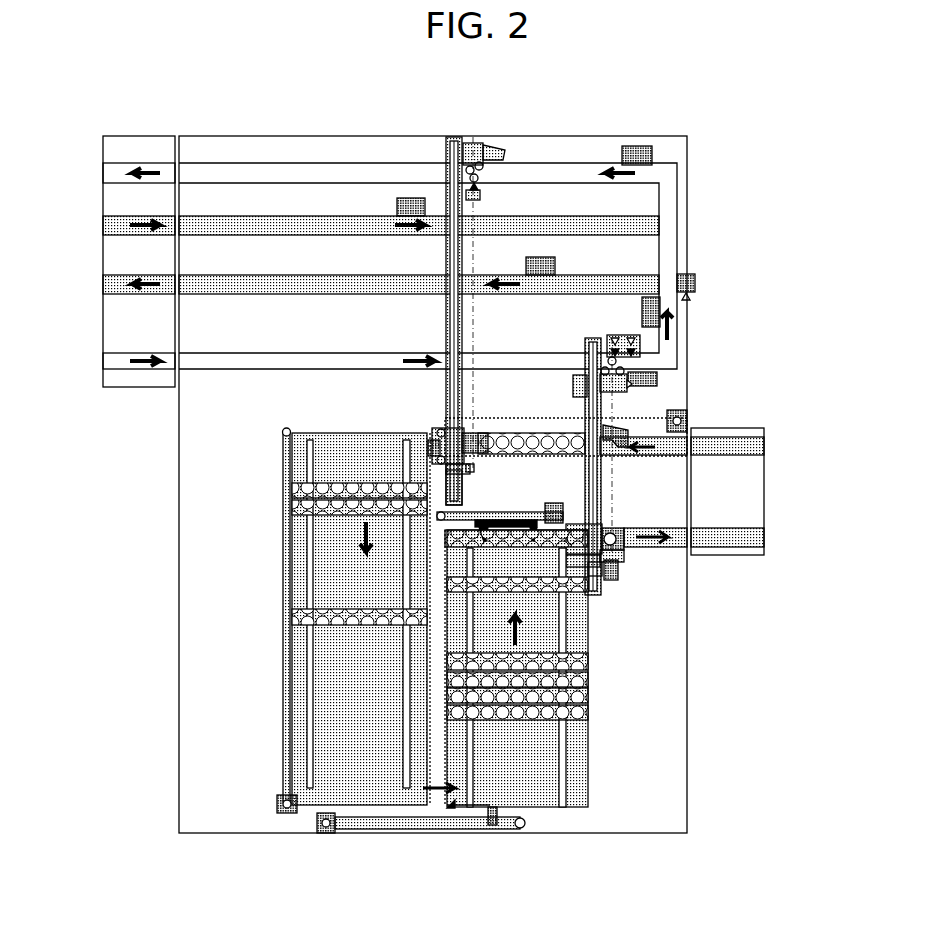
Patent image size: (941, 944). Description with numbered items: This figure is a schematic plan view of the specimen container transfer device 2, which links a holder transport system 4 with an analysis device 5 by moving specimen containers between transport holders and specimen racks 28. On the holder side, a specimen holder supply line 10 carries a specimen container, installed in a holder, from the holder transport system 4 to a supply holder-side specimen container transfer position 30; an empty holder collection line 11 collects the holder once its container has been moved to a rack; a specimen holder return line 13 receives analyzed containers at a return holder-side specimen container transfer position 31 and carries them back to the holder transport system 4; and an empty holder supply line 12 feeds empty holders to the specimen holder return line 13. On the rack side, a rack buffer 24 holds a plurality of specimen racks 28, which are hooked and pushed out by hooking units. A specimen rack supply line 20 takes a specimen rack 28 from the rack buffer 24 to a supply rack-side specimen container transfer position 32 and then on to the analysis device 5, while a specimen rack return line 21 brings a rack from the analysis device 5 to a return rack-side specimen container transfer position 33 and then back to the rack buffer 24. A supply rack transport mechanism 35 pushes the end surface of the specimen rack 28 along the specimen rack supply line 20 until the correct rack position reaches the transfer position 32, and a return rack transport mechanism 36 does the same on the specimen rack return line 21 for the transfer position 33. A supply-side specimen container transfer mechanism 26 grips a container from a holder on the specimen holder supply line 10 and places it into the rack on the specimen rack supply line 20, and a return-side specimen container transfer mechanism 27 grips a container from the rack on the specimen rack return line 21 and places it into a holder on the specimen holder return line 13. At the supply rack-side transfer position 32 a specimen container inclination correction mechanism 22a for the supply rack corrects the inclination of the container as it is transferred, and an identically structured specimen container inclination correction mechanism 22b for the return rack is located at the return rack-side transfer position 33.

The specimen container transfer device 2 is at (201, 856).
The holder transport system 4 is at (136, 112).
The analysis device 5 is at (808, 538).
The specimen holder supply line 10 is at (342, 353).
The empty holder collection line 11 is at (303, 275).
The empty holder supply line 12 is at (256, 216).
The specimen holder return line 13 is at (222, 163).
The specimen rack supply line 20 is at (725, 550).
The specimen rack return line 21 is at (728, 428).
The specimen container inclination correction mechanism for the supply rack 22a is at (640, 532).
The specimen container inclination correction mechanism for the return rack 22b is at (430, 440).
The rack buffer 24 is at (312, 755).
The supply-side specimen container transfer mechanism 26 is at (600, 338).
The return-side specimen container transfer mechanism 27 is at (466, 258).
The specimen rack 28 is at (305, 622).
The supply holder-side specimen container transfer position 30 is at (636, 358).
The return holder-side specimen container transfer position 31 is at (493, 142).
The supply rack-side specimen container transfer position 32 is at (618, 565).
The return rack-side specimen container transfer position 33 is at (472, 433).
The supply rack transport mechanism 35 is at (505, 515).
The return rack transport mechanism 36 is at (612, 440).